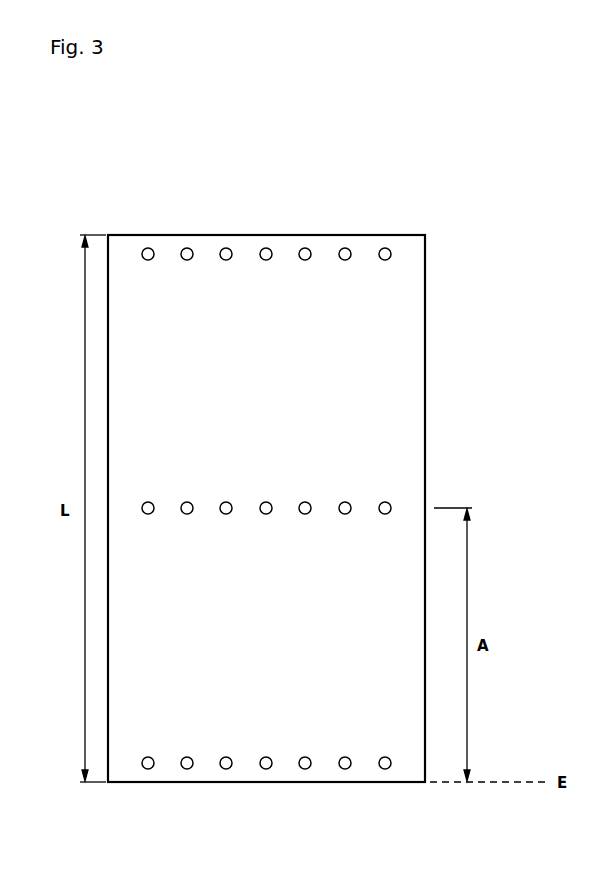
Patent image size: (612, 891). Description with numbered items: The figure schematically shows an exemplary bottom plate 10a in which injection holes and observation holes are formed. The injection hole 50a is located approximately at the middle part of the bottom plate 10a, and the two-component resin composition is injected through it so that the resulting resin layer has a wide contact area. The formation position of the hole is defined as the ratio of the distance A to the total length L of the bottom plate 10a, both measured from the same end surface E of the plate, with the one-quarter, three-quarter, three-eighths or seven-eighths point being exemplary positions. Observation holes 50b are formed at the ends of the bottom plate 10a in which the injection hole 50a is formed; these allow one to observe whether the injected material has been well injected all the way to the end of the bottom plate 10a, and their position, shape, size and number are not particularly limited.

The bottom plate 10a is at (440, 190).
The injection hole 50a is at (390, 502).
The observation hole 50b is at (304, 248).